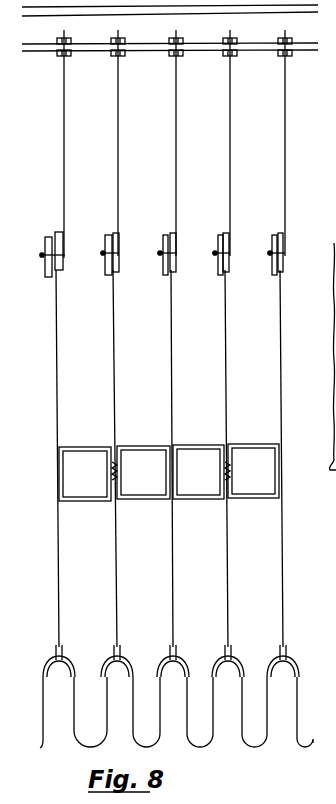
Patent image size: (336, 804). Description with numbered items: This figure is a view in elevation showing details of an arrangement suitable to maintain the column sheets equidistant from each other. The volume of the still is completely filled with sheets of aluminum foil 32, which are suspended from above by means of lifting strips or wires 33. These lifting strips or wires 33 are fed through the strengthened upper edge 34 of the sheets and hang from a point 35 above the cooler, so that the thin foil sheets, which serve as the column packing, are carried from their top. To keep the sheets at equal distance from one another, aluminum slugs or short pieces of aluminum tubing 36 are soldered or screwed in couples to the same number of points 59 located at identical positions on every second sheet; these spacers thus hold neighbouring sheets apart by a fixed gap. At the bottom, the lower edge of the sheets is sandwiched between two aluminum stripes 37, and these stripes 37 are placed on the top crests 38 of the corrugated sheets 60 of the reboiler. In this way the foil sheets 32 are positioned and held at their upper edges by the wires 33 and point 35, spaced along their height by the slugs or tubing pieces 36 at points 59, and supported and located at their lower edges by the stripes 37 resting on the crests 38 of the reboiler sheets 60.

The sheets of aluminum foil 32 is at (113, 356).
The lifting strips or wires 33 is at (118, 152).
The strengthened upper edge 34 is at (108, 268).
The suspension point 35 is at (237, 41).
The aluminum slugs or short pieces of aluminum tubing 36 is at (197, 500).
The aluminum stripes 37 is at (115, 665).
The top crests 38 is at (125, 668).
The attachment points 59 is at (111, 470).
The corrugated sheets 60 is at (60, 725).